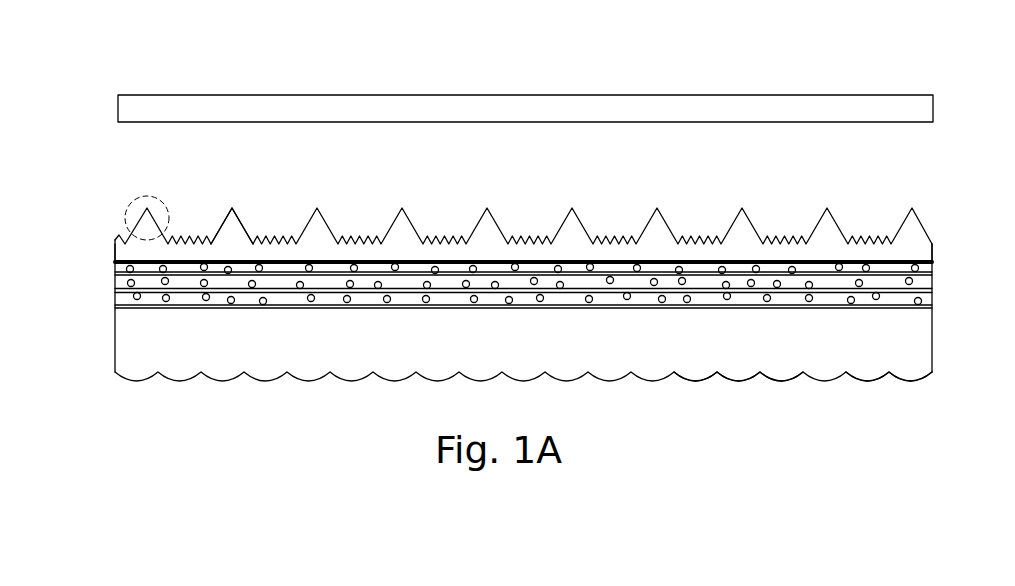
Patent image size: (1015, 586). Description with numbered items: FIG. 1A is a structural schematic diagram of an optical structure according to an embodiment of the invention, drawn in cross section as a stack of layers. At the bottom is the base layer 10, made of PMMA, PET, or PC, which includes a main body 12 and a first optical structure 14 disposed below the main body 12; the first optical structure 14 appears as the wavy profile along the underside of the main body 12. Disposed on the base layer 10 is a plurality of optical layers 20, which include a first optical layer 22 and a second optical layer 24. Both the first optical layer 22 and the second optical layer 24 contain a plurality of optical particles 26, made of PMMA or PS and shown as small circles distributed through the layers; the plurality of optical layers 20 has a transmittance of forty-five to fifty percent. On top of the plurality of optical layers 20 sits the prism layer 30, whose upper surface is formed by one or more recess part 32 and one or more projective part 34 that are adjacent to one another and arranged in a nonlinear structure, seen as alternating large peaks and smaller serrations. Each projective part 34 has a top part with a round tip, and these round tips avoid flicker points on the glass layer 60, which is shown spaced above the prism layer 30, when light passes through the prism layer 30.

The base layer 10 is at (964, 346).
The main body 12 is at (732, 363).
The first optical structure 14 is at (870, 379).
The plurality of optical layers 20 is at (936, 286).
The first optical layer 22 is at (118, 300).
The second optical layer 24 is at (118, 275).
The optical particles 26 is at (925, 297).
The prism layer 30 is at (925, 255).
The recess part 32 is at (700, 204).
The projective part 34 is at (235, 217).
The glass layer 60 is at (927, 108).